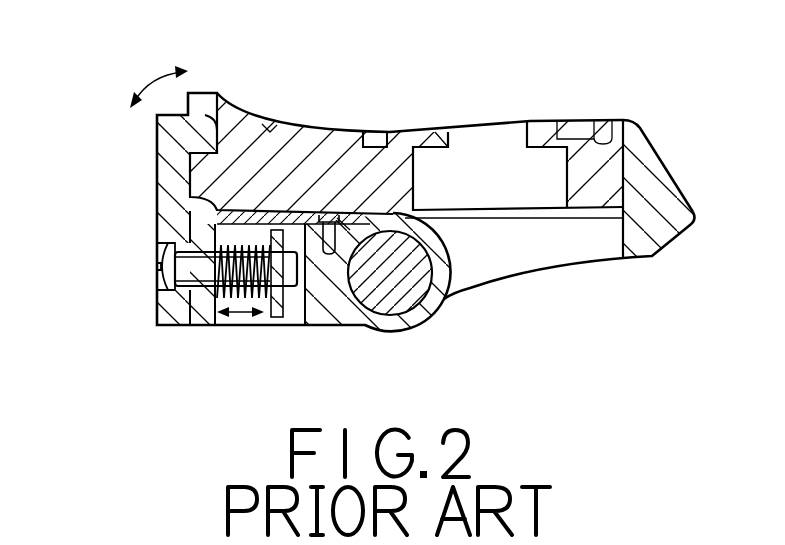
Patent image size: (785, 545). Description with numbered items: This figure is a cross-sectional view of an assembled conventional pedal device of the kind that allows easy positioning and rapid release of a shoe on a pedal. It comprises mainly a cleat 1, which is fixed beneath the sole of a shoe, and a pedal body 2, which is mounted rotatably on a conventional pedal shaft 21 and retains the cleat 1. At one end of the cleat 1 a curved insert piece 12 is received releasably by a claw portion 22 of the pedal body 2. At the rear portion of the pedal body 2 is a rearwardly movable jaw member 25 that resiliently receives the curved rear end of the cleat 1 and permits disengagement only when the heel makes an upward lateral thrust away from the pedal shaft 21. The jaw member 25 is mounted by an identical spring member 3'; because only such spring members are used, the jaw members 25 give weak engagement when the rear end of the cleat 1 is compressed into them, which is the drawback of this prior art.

The cleat 1 is at (346, 118).
The pedal body 2 is at (516, 290).
The spring member 3' is at (227, 306).
The curved insert piece 12 is at (612, 178).
The pedal shaft 21 is at (387, 293).
The claw portion 22 is at (611, 140).
The movable jaw member 25 is at (172, 183).